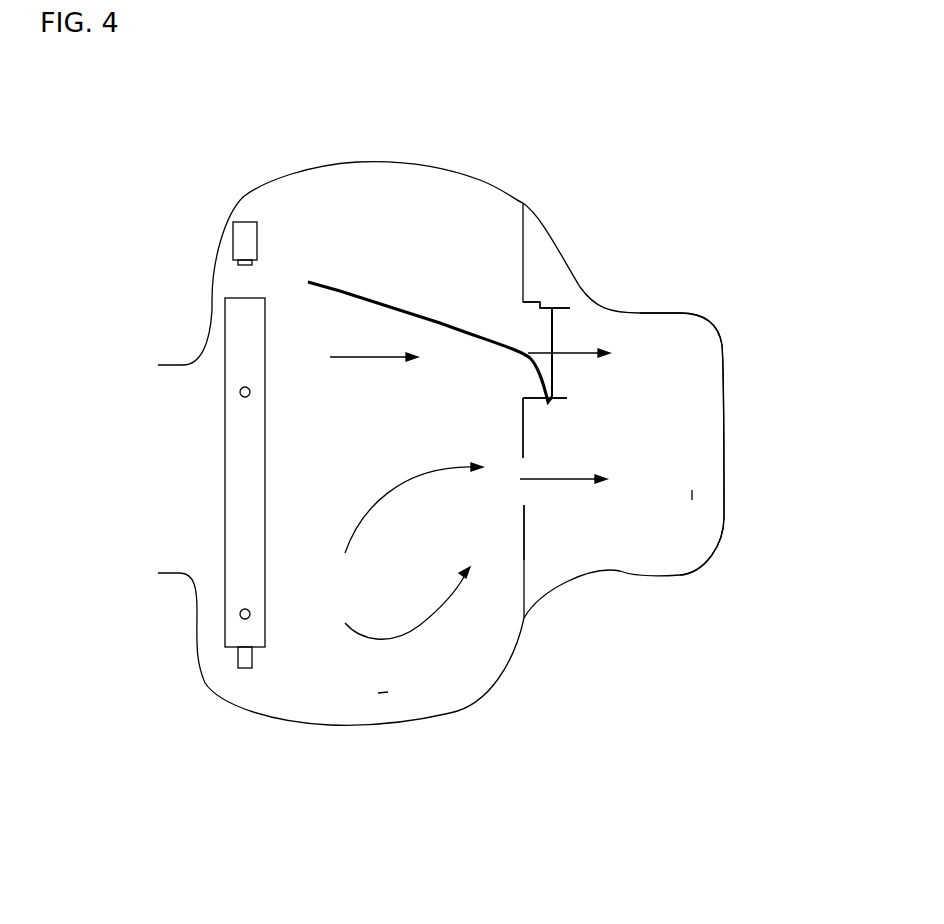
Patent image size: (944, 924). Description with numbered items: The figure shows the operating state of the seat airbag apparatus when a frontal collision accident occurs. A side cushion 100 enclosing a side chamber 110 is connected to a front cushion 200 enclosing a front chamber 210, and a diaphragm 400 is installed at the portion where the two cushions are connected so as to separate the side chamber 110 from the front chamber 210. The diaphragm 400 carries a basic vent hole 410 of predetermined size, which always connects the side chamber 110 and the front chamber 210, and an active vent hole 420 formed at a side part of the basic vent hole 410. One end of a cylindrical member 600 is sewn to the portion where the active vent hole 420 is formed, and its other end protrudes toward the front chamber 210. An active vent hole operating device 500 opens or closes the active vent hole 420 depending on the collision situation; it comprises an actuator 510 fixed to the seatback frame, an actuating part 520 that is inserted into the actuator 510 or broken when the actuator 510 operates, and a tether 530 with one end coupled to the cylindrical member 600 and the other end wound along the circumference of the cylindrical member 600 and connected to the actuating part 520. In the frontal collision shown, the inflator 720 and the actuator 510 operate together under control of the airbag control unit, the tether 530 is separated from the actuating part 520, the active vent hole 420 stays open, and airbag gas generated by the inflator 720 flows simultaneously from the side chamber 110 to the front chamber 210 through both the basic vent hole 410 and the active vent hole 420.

The side cushion 100 is at (217, 697).
The side chamber 110 is at (383, 694).
The front cushion 200 is at (718, 552).
The front chamber 210 is at (692, 495).
The diaphragm 400 is at (524, 423).
The basic vent hole 410 is at (524, 470).
The active vent hole 420 is at (533, 340).
The active vent hole operating device 500 is at (177, 202).
The actuator 510 is at (245, 242).
The actuating part 520 is at (238, 264).
The tether 530 is at (338, 292).
The cylindrical member 600 is at (540, 302).
The inflator 720 is at (258, 493).